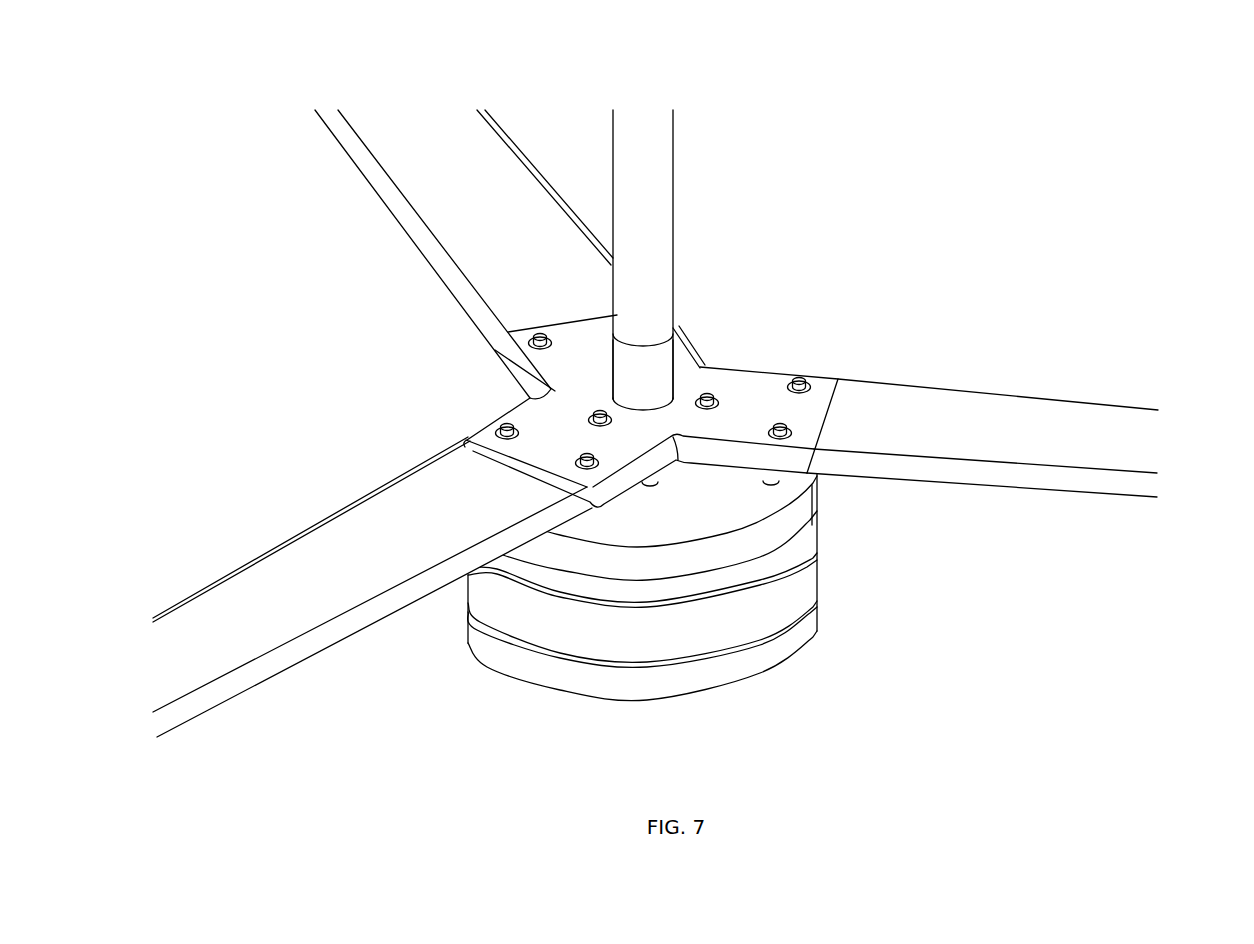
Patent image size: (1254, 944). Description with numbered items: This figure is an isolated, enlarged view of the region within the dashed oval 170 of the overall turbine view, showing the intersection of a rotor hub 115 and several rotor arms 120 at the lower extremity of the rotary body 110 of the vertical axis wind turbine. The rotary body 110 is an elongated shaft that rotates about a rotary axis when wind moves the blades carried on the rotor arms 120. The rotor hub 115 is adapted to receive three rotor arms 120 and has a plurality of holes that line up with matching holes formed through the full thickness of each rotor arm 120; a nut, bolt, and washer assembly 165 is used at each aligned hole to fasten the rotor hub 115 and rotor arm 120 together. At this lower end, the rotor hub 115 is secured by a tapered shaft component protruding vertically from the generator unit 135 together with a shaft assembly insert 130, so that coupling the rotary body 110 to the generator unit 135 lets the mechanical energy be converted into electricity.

The rotary body 110 is at (655, 221).
The rotor hub 115 is at (763, 383).
The rotor arm 120 is at (432, 200).
The shaft assembly insert 130 is at (657, 359).
The generator unit 135 is at (793, 586).
The nut, bolt, and washer assembly 165 is at (538, 342).
The dashed oval 170 is at (1136, 126).